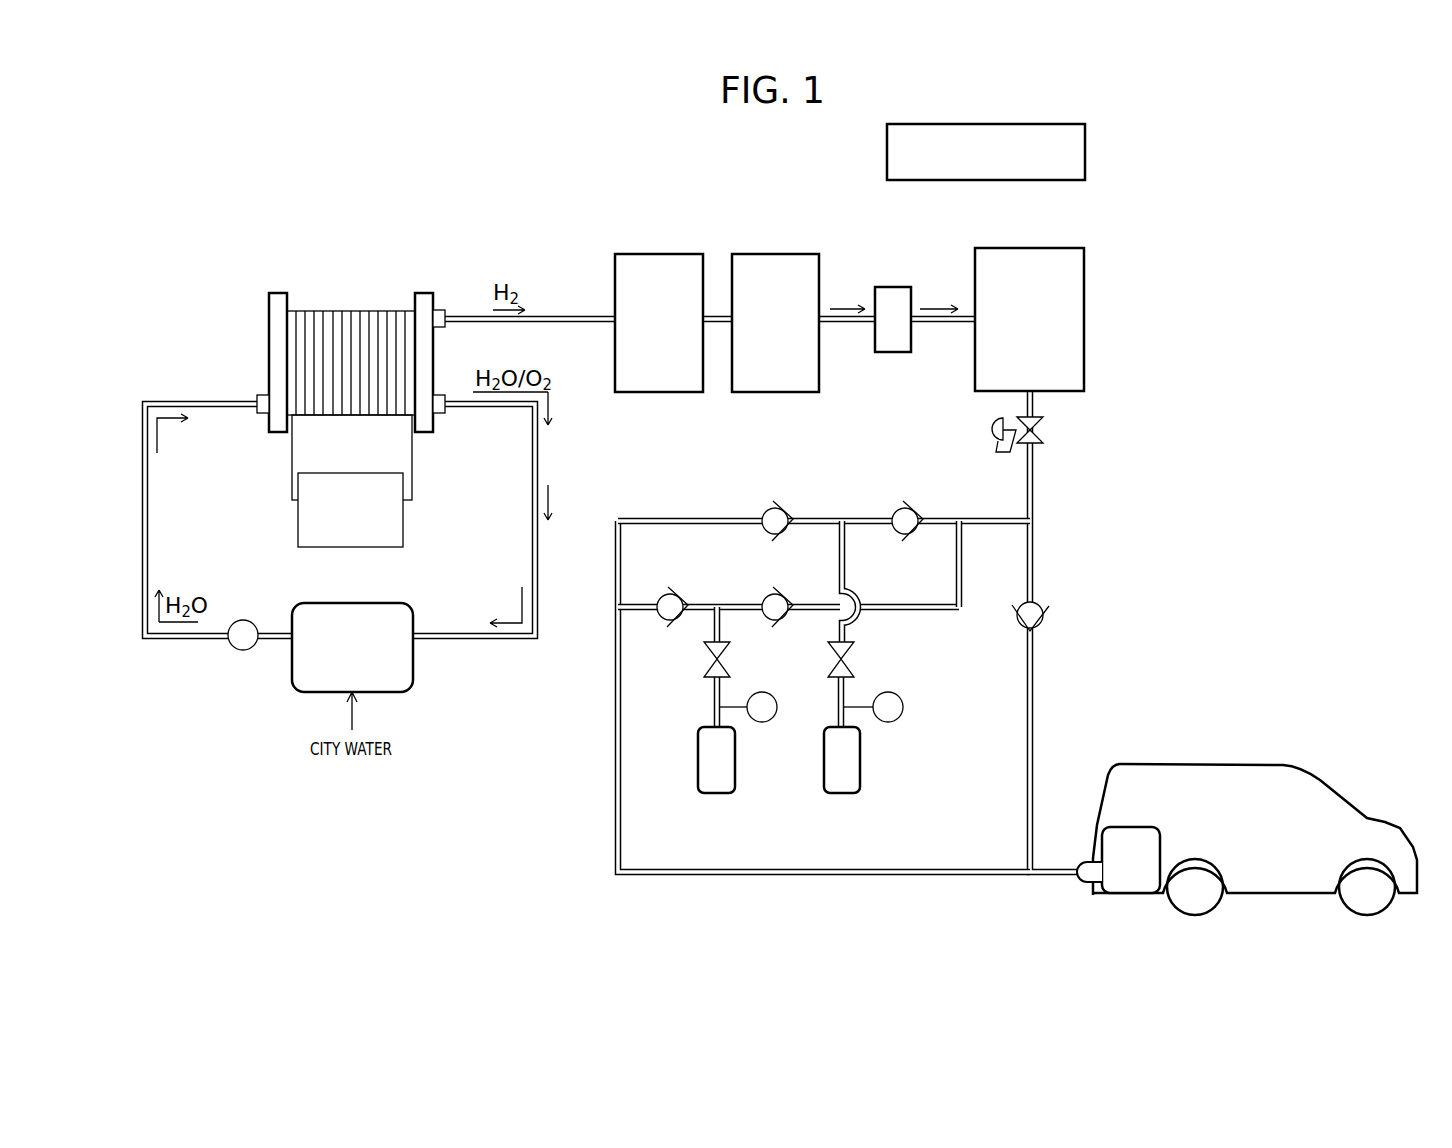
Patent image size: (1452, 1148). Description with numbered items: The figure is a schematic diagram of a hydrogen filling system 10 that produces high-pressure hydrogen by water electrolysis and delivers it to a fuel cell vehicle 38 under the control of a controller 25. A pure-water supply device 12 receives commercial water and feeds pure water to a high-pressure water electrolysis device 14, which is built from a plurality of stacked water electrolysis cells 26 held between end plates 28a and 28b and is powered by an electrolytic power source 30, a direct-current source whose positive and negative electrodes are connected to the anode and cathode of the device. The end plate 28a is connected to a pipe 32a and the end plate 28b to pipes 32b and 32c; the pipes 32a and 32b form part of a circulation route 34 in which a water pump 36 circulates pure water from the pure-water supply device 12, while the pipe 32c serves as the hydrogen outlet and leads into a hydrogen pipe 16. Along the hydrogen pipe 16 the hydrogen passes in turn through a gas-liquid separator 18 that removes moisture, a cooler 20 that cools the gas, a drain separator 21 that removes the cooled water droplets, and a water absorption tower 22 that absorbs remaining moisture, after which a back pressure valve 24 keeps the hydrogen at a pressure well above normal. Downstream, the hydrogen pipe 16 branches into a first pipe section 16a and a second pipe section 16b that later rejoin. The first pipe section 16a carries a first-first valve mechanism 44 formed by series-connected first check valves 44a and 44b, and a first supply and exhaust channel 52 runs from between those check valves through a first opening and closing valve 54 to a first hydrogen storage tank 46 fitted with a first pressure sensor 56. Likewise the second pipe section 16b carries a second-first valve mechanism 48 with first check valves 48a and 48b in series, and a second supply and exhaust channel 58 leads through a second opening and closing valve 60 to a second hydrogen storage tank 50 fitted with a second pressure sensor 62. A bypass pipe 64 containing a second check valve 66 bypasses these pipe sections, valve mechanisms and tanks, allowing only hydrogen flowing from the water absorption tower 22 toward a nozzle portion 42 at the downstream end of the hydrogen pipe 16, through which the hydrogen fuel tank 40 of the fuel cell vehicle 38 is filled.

The hydrogen filling system 10 is at (283, 192).
The pure-water supply device 12 is at (413, 672).
The high-pressure water electrolysis device 14 is at (353, 359).
The hydrogen pipe 16 is at (580, 317).
The first pipe section 16a is at (940, 518).
The second pipe section 16b is at (940, 612).
The gas-liquid separator 18 is at (675, 254).
The cooler 20 is at (793, 254).
The drain separator 21 is at (900, 287).
The water absorption tower 22 is at (1057, 248).
The back pressure valve 24 is at (1045, 420).
The controller 25 is at (1087, 140).
The water electrolysis cells 26 is at (332, 410).
The end plate 28a is at (268, 357).
The end plate 28b is at (438, 357).
The electrolytic power source 30 is at (365, 472).
The pipe 32a is at (267, 415).
The pipe 32b is at (437, 417).
The pipe 32c is at (440, 310).
The circulation route 34 is at (148, 537).
The water pump 36 is at (243, 618).
The fuel cell vehicle 38 is at (1240, 815).
The hydrogen fuel tank 40 is at (1145, 826).
The nozzle portion 42 is at (1087, 862).
The first-first valve mechanism 44 is at (877, 433).
The first check valve 44a is at (897, 506).
The first check valve 44b is at (767, 506).
The first hydrogen storage tank 46 is at (824, 778).
The second-first valve mechanism 48 is at (718, 604).
The first check valve 48a is at (772, 622).
The first check valve 48b is at (667, 622).
The second hydrogen storage tank 50 is at (698, 778).
The first supply and exhaust channel 52 is at (845, 560).
The first opening and closing valve 54 is at (835, 677).
The first pressure sensor 56 is at (888, 725).
The second supply and exhaust channel 58 is at (720, 630).
The second opening and closing valve 60 is at (710, 677).
The second pressure sensor 62 is at (763, 725).
The bypass pipe 64 is at (1035, 663).
The second check valve 66 is at (1037, 598).